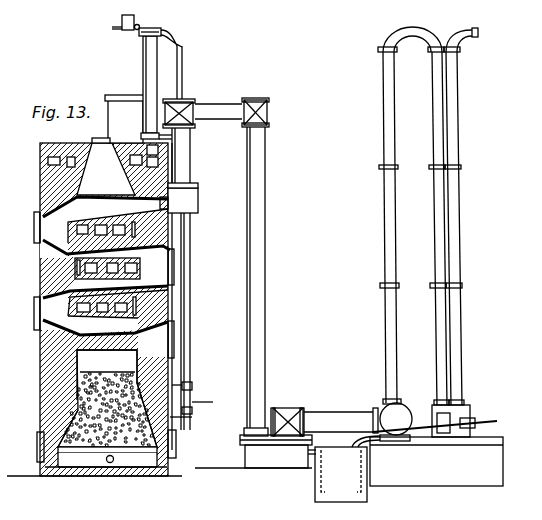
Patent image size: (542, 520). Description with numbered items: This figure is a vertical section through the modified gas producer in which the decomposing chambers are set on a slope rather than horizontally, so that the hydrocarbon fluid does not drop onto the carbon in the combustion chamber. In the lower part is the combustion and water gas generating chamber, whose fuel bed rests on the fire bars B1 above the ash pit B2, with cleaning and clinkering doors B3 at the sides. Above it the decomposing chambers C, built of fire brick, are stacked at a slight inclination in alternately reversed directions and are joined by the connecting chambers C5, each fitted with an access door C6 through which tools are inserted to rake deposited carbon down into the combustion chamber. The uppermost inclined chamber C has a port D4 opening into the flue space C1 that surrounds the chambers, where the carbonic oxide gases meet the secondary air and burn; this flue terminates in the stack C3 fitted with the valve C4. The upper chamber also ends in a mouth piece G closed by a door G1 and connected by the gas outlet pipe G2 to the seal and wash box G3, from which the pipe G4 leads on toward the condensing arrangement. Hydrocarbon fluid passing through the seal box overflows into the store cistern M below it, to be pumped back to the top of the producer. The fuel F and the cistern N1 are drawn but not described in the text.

The annular flue space C1 is at (107, 295).
The decomposing chamber C is at (105, 251).
The connecting chamber C5 is at (104, 284).
The access door C6 is at (198, 342).
The fuel F is at (107, 409).
The ash pit B2 is at (107, 458).
The fire bars B1 is at (100, 457).
The cleaning and clinkering door B3 is at (193, 441).
The chimney N1 is at (119, 119).
The stack C3 is at (146, 79).
The stack valve C4 is at (151, 29).
The gas outlet pipe G2 is at (216, 241).
The mouth piece G is at (183, 200).
The door G1 is at (199, 200).
The port D4 is at (157, 200).
The seal and wash box G3 is at (253, 438).
The condenser pipe G4 is at (341, 420).
The store cistern M is at (344, 469).